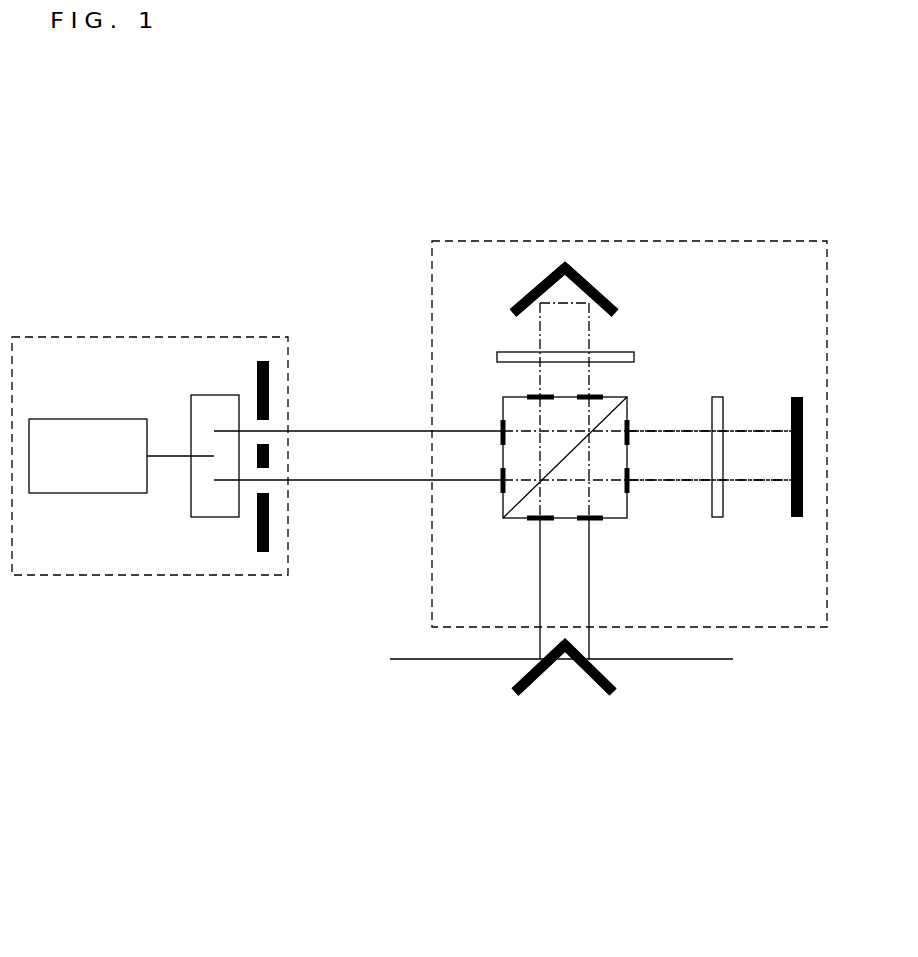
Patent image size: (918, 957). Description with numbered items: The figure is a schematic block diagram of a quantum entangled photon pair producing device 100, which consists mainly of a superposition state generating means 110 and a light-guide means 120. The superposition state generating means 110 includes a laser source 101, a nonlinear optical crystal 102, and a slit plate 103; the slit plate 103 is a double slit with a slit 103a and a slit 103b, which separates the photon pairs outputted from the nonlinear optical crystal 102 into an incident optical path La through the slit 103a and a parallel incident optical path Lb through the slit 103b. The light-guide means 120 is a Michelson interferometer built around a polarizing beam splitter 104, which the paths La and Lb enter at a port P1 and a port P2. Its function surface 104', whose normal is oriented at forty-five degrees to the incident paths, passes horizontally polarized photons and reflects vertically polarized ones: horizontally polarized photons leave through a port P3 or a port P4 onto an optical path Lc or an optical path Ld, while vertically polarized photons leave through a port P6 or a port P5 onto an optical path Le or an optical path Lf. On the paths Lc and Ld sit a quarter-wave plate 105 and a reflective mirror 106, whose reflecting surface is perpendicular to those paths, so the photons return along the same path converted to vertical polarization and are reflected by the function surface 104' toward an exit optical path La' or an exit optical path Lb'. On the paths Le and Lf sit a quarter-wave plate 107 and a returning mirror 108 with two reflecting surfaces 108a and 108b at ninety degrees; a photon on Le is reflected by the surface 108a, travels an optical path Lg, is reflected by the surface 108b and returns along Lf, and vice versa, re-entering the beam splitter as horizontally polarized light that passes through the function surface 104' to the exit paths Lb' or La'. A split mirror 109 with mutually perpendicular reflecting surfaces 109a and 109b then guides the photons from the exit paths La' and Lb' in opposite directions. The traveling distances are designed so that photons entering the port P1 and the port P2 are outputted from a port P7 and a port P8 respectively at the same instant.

The quantum entangled photon pair producing device 100 is at (158, 186).
The superposition state generating means 110 is at (148, 337).
The laser source 101 is at (88, 419).
The nonlinear optical crystal 102 is at (215, 395).
The slit plate 103 is at (263, 361).
The slit 103a is at (265, 426).
The slit 103b is at (265, 485).
The polarizing beam splitter 104 is at (595, 436).
The function surface 104' is at (501, 483).
The quarter-wave plate 105 is at (718, 397).
The reflective mirror 106 is at (797, 397).
The quarter-wave plate 107 is at (497, 357).
The returning mirror 108 is at (622, 188).
The reflecting surface 108a is at (580, 266).
The reflecting surface 108b is at (555, 266).
The split mirror 109 is at (628, 762).
The reflecting surface 109a is at (528, 698).
The reflecting surface 109b is at (605, 698).
The light-guide means 120 is at (737, 241).
The incident optical path La is at (502, 411).
The incident optical path Lb is at (502, 505).
The optical path Lc is at (758, 431).
The optical path Ld is at (760, 482).
The optical path Le is at (592, 334).
The optical path Lf is at (538, 334).
The optical path Lg is at (565, 303).
The exit optical path La' is at (616, 528).
The exit optical path Lb' is at (512, 528).
The port P1 is at (486, 426).
The port P2 is at (486, 489).
The port P3 is at (645, 426).
The port P4 is at (645, 489).
The port P5 is at (528, 384).
The port P6 is at (602, 384).
The port P7 is at (528, 534).
The port P8 is at (602, 534).